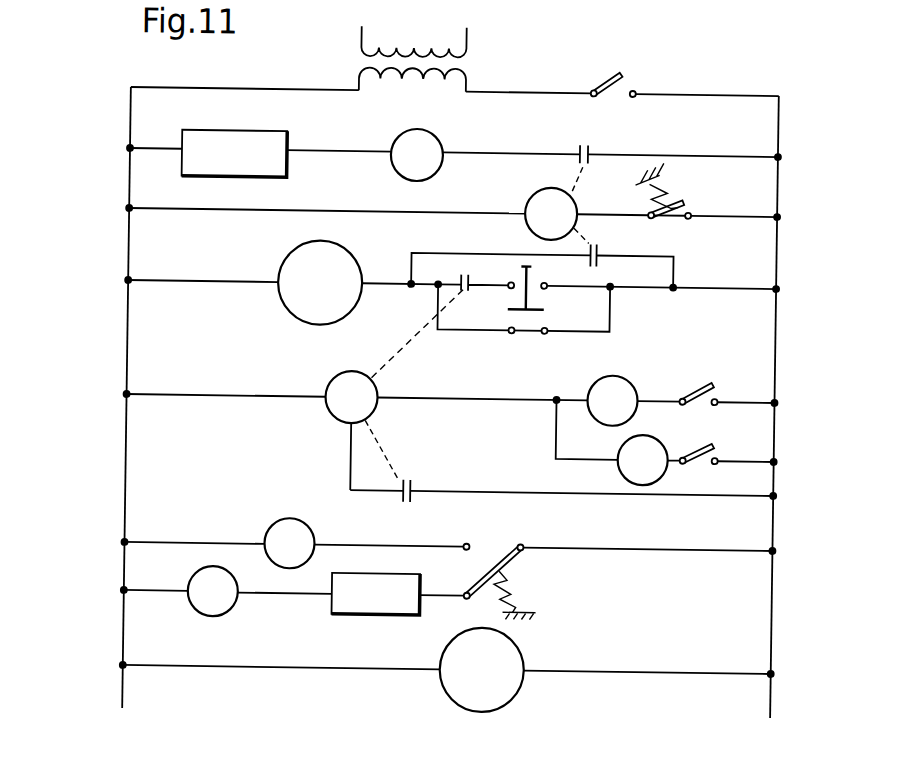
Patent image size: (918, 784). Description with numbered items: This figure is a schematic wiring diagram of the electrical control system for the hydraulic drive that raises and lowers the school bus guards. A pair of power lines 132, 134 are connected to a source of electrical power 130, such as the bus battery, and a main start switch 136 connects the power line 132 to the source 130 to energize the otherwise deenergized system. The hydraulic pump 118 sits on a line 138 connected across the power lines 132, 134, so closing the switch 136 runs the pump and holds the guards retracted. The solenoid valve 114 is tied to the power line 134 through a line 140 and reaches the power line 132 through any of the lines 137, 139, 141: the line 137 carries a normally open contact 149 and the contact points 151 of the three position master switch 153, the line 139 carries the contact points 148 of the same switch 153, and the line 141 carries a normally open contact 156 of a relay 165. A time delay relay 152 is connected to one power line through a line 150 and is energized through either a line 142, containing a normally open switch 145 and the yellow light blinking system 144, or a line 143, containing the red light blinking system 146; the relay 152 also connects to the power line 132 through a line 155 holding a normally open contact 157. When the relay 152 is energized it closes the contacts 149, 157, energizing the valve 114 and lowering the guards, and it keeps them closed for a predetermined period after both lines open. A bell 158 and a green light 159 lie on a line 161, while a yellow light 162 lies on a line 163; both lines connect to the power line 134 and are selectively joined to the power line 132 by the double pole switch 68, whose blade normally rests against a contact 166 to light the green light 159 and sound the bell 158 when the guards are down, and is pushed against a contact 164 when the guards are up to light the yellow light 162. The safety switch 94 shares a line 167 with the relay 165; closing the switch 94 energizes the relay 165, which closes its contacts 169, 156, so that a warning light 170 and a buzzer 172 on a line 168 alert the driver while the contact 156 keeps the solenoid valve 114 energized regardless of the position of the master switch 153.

The source of electrical power 130 is at (462, 59).
The main start switch 136 is at (622, 66).
The buzzer 172 is at (288, 133).
The warning light 170 is at (441, 139).
The contact 169 is at (580, 141).
The line 168 is at (680, 149).
The power line 132 is at (778, 124).
The power line 134 is at (130, 127).
The line 167 is at (320, 205).
The relay 165 is at (527, 202).
The safety switch 94 is at (685, 198).
The line 140 is at (210, 278).
The line 141 is at (420, 248).
The contact points 151 is at (548, 256).
The contact 156 is at (600, 249).
The solenoid valve 114 is at (286, 300).
The line 137 is at (374, 279).
The master switch 153 is at (546, 304).
The contact 149 is at (470, 288).
The line 139 is at (490, 327).
The contact points 148 is at (550, 328).
The line 150 is at (192, 392).
The yellow light blinking system 144 is at (615, 370).
The switch 145 is at (702, 375).
The line 142 is at (753, 391).
The line 143 is at (753, 451).
The red light blinking system 146 is at (629, 471).
The time delay relay 152 is at (333, 407).
The contact 157 is at (418, 481).
The line 155 is at (487, 486).
The yellow light 162 is at (296, 516).
The line 163 is at (195, 541).
The contact 164 is at (470, 540).
The double pole switch 68 is at (527, 540).
The green light 159 is at (206, 610).
The line 161 is at (296, 595).
The bell 158 is at (371, 612).
The contact 166 is at (470, 596).
The hydraulic pump 118 is at (531, 648).
The line 138 is at (690, 664).